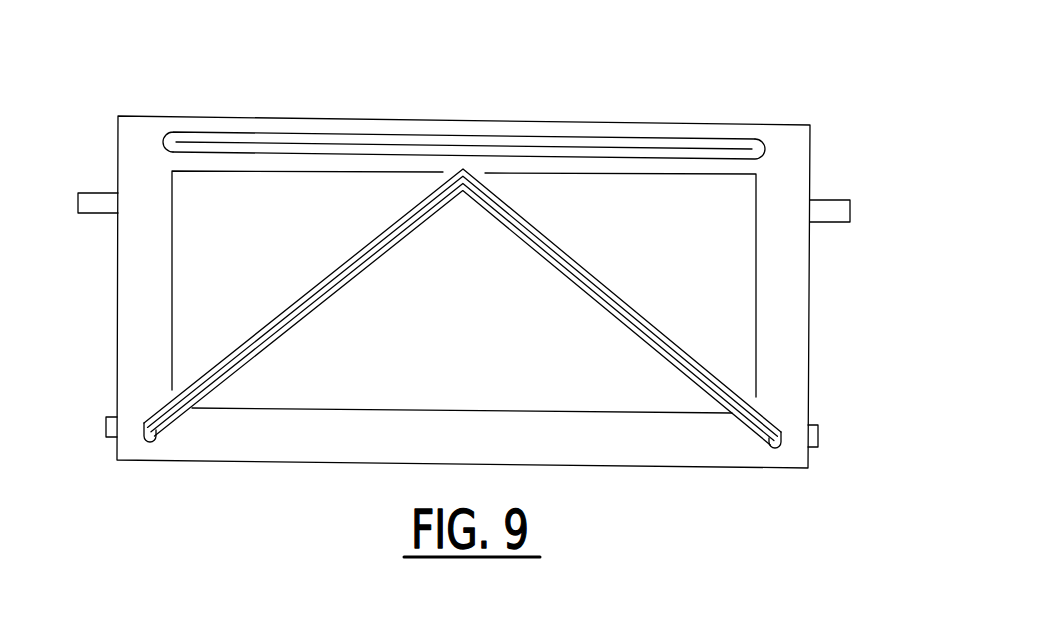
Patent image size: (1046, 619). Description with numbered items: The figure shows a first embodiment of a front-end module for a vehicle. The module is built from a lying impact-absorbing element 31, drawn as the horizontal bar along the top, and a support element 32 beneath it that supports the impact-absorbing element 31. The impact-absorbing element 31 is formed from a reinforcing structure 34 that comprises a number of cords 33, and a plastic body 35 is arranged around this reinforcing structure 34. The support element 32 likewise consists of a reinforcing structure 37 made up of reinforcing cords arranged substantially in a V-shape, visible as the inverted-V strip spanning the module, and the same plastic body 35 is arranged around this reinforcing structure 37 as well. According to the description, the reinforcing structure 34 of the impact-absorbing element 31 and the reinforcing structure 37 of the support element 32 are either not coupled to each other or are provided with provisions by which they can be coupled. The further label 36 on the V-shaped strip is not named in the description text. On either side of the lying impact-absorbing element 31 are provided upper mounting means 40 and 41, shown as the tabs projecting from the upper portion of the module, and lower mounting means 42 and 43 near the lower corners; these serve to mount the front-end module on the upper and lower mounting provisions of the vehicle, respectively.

The impact-absorbing element 31 is at (510, 128).
The support element 32 is at (352, 269).
The cords 33 is at (600, 145).
The reinforcing structure 34 is at (675, 142).
The plastic body 35 is at (752, 132).
The outer edge of inclined channel 36 is at (298, 308).
The reinforcing structure 37 is at (167, 407).
The upper mounting means 40 is at (97, 208).
The upper mounting means 41 is at (840, 213).
The lower mounting means 42 is at (108, 425).
The lower mounting means 43 is at (813, 437).